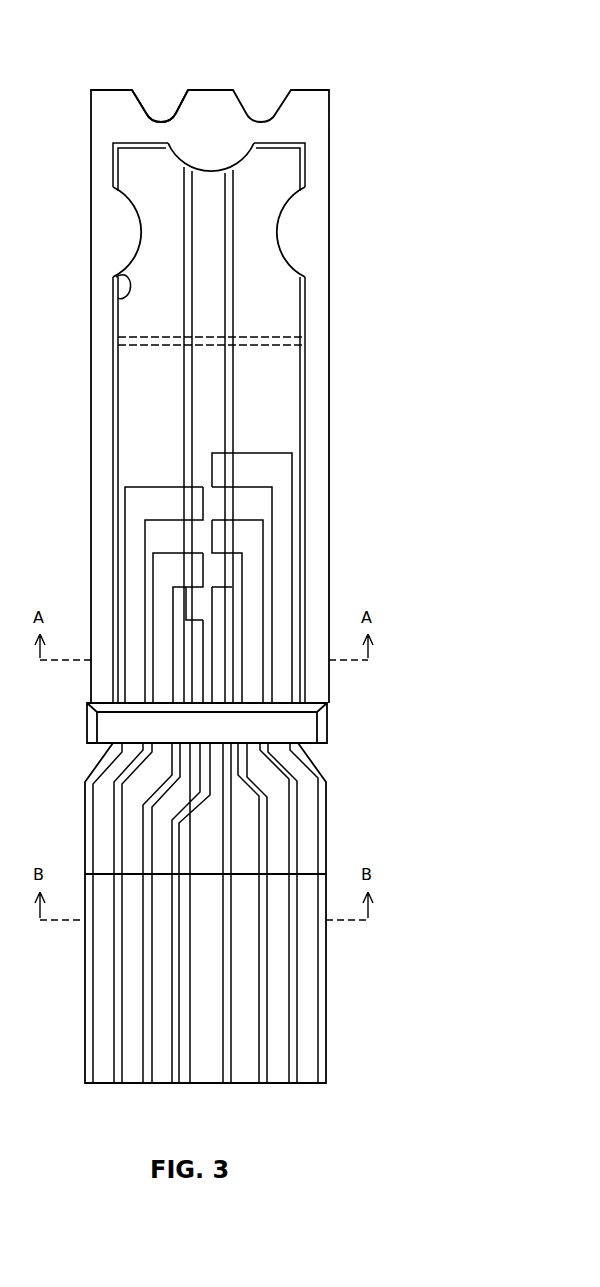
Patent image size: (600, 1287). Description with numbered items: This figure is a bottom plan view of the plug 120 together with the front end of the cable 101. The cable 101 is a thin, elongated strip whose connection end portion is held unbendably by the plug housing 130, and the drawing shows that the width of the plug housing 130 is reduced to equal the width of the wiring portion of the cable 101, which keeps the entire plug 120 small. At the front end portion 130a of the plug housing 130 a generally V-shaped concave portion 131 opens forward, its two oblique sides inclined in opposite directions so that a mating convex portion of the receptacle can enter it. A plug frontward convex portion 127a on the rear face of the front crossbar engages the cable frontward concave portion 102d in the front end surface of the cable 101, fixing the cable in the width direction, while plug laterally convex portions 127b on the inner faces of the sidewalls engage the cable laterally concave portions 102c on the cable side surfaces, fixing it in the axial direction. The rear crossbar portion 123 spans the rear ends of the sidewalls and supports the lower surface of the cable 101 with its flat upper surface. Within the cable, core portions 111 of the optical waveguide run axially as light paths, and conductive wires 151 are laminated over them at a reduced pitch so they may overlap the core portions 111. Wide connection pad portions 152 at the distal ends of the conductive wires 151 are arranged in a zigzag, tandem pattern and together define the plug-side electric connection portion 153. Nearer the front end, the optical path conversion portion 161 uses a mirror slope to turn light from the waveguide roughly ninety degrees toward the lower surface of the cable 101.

The cable 101 is at (328, 843).
The cable laterally concave portion 102c is at (123, 298).
The cable frontward concave portion 102d is at (177, 163).
The core portion 111 is at (236, 391).
The plug 120 is at (221, 557).
The rear crossbar portion 123 is at (305, 732).
The plug frontward convex portion 127a is at (213, 163).
The plug laterally convex portion 127b is at (297, 232).
The plug housing 130 is at (92, 401).
The front end portion 130a is at (310, 90).
The concave portion 131 is at (160, 105).
The conductive wire 151 is at (284, 578).
The connection pad portion 152 is at (262, 470).
The plug-side electric connection portion 153 is at (203, 575).
The optical path conversion portion 161 is at (275, 337).